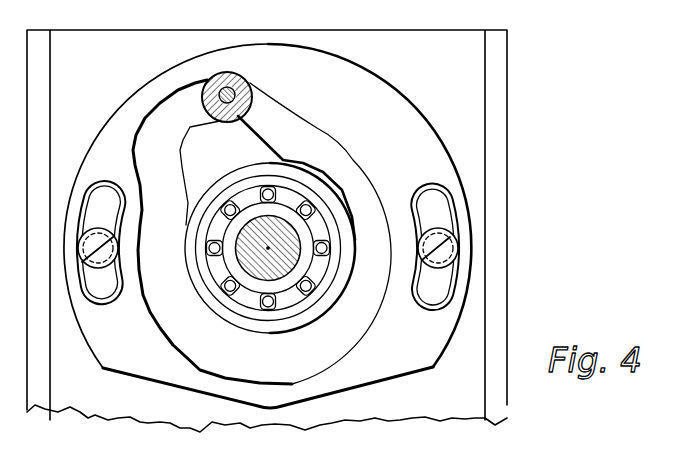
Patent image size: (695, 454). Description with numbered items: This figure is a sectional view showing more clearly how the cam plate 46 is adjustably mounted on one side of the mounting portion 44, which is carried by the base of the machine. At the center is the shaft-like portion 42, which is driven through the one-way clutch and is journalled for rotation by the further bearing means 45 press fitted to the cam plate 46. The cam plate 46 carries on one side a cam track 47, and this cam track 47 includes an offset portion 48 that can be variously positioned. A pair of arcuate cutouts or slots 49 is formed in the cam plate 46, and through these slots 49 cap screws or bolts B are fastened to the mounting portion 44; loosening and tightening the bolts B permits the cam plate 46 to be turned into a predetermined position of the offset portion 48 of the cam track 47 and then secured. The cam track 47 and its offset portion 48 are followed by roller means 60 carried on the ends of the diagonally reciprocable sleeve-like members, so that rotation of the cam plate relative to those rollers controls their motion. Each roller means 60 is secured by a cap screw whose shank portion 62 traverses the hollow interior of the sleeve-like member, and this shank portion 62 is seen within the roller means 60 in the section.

The shaft-like portion 42 is at (258, 277).
The mounting portion 44 is at (456, 41).
The bearing means 45 is at (268, 307).
The cam plate 46 is at (402, 106).
The cam track 47 is at (325, 140).
The offset portion 48 is at (166, 103).
The arcuate cutouts or slots 49 is at (108, 296).
The roller means 60 is at (250, 88).
The shank portion 62 is at (236, 100).
The cap screws or bolts B is at (114, 250).